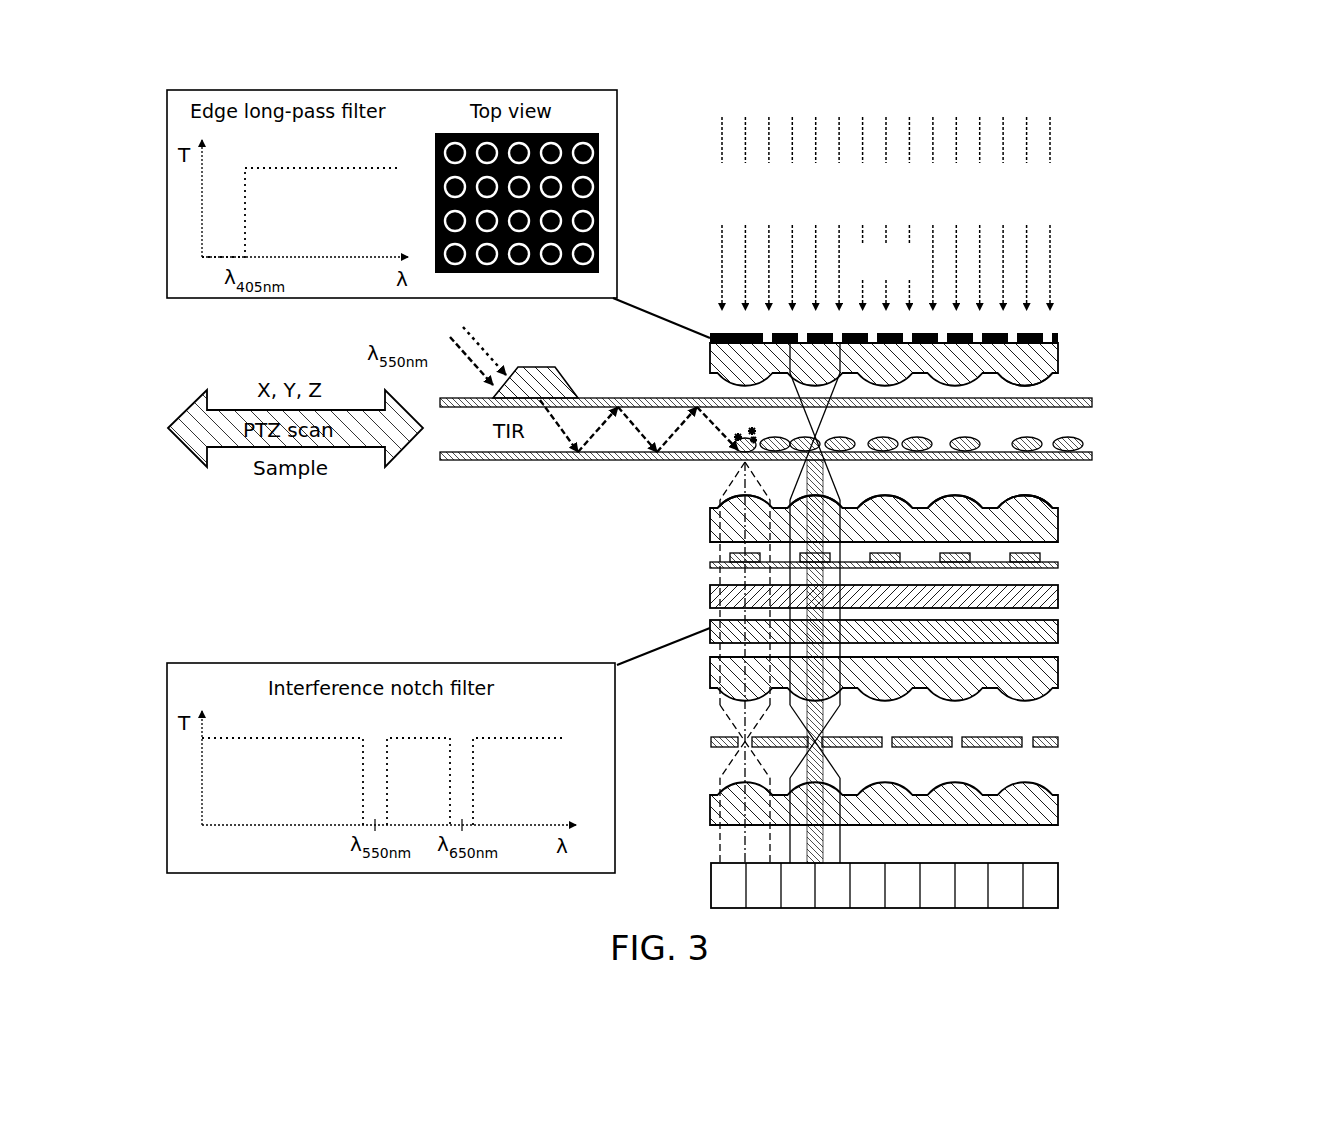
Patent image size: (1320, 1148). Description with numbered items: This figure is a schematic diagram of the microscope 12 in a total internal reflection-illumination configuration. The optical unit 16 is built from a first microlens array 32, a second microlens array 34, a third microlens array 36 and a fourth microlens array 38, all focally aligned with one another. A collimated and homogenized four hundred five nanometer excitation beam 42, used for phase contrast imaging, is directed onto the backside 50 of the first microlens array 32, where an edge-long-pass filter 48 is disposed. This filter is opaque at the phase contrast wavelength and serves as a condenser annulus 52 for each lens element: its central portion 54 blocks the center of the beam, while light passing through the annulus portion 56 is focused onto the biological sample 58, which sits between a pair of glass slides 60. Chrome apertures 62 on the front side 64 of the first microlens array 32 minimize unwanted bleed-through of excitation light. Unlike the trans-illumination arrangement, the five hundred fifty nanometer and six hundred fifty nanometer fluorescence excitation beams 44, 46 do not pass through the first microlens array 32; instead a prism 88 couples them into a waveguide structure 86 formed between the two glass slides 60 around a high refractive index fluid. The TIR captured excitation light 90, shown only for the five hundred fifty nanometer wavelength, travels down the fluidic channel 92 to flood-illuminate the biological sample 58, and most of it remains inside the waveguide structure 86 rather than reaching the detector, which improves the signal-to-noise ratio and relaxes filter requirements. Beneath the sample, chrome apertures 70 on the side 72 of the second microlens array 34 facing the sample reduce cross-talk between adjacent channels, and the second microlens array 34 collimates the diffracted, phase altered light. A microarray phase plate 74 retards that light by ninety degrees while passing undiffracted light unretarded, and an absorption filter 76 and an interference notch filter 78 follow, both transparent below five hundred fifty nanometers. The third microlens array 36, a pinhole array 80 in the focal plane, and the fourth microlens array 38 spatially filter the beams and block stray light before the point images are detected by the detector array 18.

The microscope 12 is at (1150, 250).
The optical unit 16 is at (1076, 542).
The detector array 18 is at (1045, 878).
The first microlens array 32 is at (1060, 366).
The second microlens array 34 is at (1060, 534).
The third microlens array 36 is at (1060, 673).
The fourth microlens array 38 is at (1060, 805).
The 405 nm excitation beam 42 is at (722, 112).
The 550 nm excitation beam 44 is at (470, 368).
The 650 nm excitation beam 46 is at (498, 339).
The edge-long-pass filter 48 is at (1060, 340).
The backside 50 is at (1047, 332).
The condenser annulus 52 is at (456, 128).
The central portion 54 is at (437, 148).
The annulus portion 56 is at (441, 134).
The biological sample 58 is at (768, 438).
The glass slides 60 is at (1093, 450).
The chrome apertures 62 is at (1048, 388).
The front side 64 is at (1094, 402).
The chrome apertures 70 is at (1060, 510).
The side 72 is at (1006, 494).
The microarray phase plate 74 is at (1060, 564).
The absorption filter 76 is at (1060, 596).
The interference notch filter 78 is at (1060, 631).
The pinhole array 80 is at (1060, 741).
The waveguide structure 86 is at (551, 473).
The prism 88 is at (572, 424).
The TIR captured excitation light 90 is at (591, 440).
The fluidic channel 92 is at (448, 432).